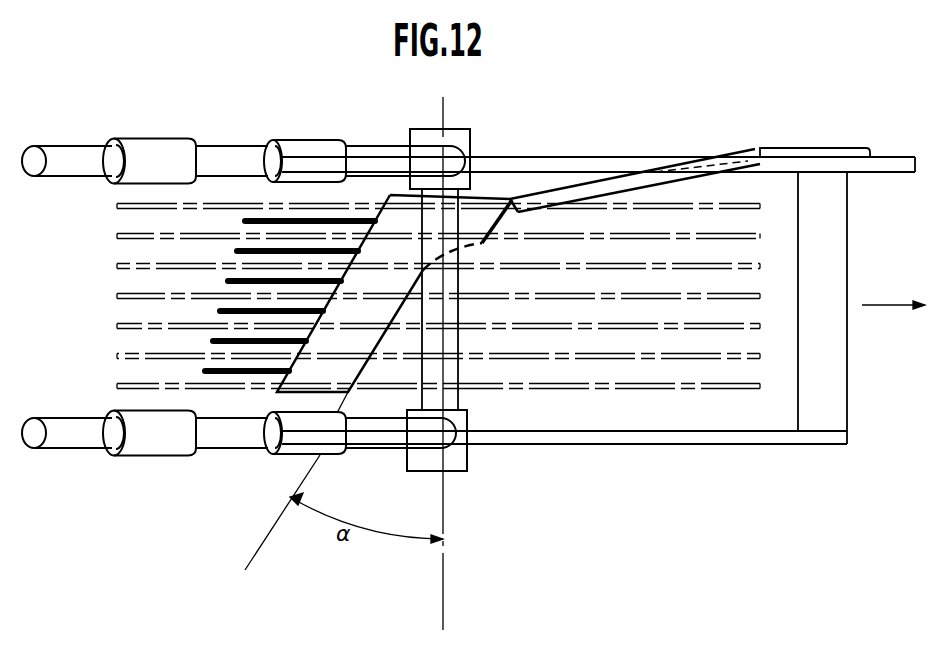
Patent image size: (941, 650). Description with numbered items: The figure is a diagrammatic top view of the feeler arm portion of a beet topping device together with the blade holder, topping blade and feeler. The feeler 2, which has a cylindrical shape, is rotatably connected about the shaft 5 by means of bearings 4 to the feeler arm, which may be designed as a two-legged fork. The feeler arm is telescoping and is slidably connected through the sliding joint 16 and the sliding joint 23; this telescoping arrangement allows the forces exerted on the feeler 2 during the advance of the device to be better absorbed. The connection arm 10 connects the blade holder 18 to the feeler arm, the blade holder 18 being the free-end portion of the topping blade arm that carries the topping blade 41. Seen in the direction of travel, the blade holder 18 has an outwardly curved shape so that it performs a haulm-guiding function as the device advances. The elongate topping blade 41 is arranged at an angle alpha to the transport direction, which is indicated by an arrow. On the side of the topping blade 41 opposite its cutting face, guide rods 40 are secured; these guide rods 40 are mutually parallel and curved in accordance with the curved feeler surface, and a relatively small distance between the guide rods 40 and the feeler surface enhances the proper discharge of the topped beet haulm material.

The feeler 2 is at (662, 376).
The bearings 4 is at (424, 133).
The shaft 5 is at (455, 370).
The connection arm 10 is at (549, 156).
The sliding joint 16 is at (149, 151).
The blade holder 18 is at (602, 187).
The sliding joint 23 is at (311, 146).
The guide rods 40 is at (265, 316).
The topping blade 41 is at (367, 343).